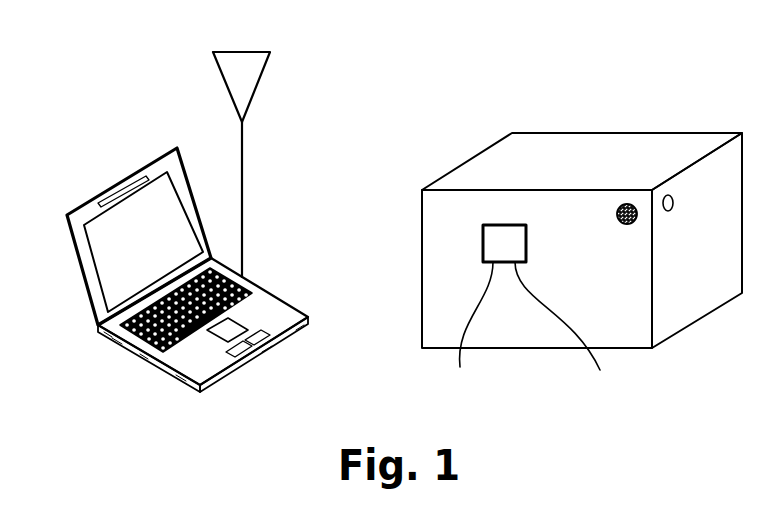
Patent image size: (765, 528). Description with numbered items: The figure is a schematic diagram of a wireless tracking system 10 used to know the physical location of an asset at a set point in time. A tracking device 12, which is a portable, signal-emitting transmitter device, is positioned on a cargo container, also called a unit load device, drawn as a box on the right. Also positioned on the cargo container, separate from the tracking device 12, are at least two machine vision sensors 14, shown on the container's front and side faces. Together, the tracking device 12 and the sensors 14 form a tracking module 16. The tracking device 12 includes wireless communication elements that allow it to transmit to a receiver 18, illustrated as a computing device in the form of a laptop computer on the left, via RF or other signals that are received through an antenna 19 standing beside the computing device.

The tracking system 10 is at (426, 91).
The tracking device 12 is at (489, 311).
The machine vision sensors 14 is at (628, 204).
The tracking module 16 is at (627, 224).
The receiver 18 is at (113, 188).
The antenna 19 is at (243, 145).